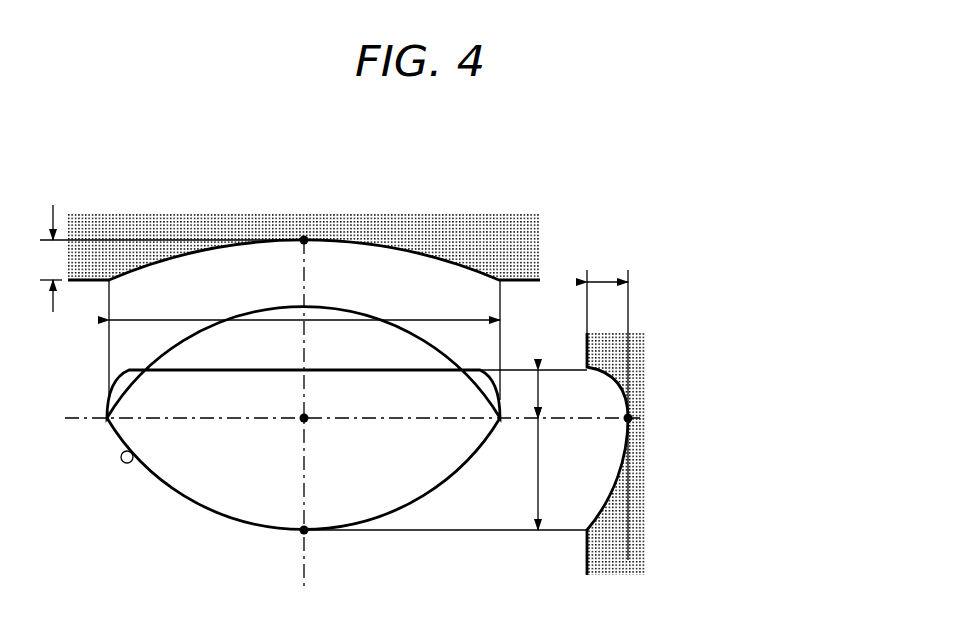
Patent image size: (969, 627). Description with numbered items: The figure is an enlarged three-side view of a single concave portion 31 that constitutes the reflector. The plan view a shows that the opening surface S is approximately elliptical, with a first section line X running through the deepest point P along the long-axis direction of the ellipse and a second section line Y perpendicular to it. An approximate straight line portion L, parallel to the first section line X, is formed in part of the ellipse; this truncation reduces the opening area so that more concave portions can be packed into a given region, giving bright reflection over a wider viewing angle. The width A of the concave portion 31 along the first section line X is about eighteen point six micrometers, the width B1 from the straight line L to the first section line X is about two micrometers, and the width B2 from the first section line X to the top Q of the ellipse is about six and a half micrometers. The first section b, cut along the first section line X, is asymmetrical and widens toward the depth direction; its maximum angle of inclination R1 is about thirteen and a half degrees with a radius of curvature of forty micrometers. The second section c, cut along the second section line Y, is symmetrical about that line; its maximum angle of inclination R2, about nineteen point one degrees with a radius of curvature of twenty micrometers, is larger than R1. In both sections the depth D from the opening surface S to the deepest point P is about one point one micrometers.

The maximum angle of inclination of the first section R1 is at (447, 262).
The maximum angle of inclination of the second section R2 is at (605, 505).
The approximate straight line portion L is at (205, 369).
The concave portion 31 is at (197, 515).
The opening surface S is at (121, 462).
The first section line X is at (343, 420).
The second section line Y is at (303, 427).
The deepest point P is at (466, 341).
The top of the approximately elliptical shape Q is at (314, 521).
The width in the first section line direction A is at (304, 340).
The first section b is at (42, 214).
The depth D is at (330, 405).
The width from the straight line to the first section line B1 is at (533, 394).
The width from the first section line to the top B2 is at (445, 474).
The plan view of the opening surface a is at (302, 475).
The second section c is at (616, 592).